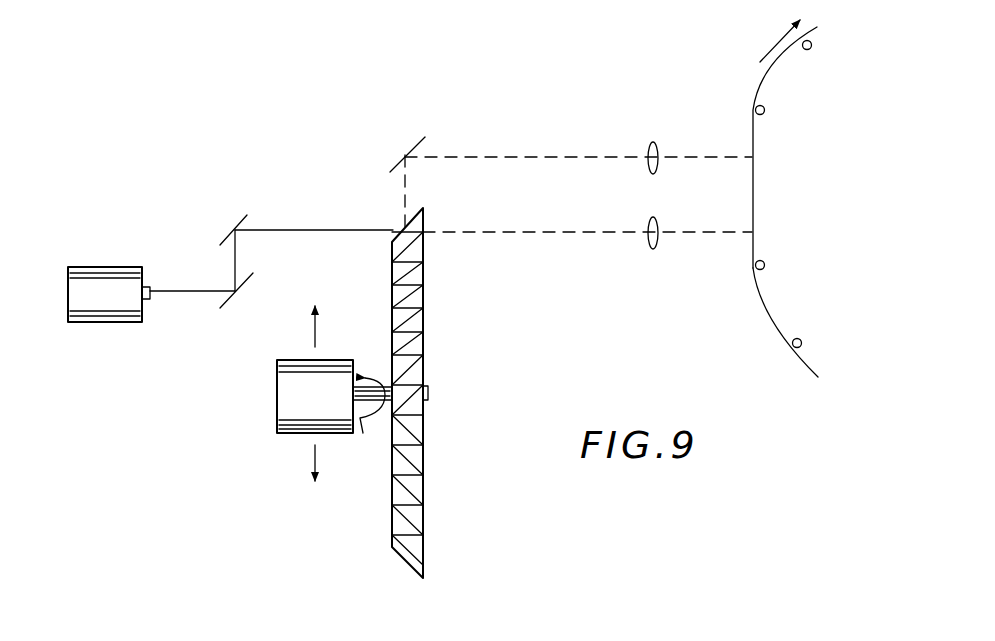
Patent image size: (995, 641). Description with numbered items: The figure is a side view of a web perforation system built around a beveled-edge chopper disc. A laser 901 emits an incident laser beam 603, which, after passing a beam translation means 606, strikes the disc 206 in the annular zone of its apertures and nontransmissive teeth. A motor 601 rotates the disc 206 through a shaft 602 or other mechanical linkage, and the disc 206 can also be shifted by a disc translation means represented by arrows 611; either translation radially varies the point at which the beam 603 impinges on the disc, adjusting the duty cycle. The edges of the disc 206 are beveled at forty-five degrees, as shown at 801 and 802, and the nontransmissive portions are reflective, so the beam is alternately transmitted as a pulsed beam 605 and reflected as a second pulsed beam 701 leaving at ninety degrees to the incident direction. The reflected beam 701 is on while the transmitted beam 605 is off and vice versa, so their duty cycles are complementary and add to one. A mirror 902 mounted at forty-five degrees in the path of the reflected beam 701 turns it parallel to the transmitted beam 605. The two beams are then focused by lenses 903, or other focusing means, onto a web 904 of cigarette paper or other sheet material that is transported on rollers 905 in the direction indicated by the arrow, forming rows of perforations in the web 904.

The laser 901 is at (140, 254).
The beam translation means 606 is at (214, 228).
The laser beam 603 is at (330, 225).
The second pulsed beam 701 is at (405, 207).
The mirror 902 is at (414, 148).
The pulsed beam 605 is at (547, 221).
The beveled edge 801 is at (455, 289).
The beveled edge 802 is at (455, 289).
The disc 206 is at (481, 484).
The motor 601 is at (284, 412).
The shaft 602 is at (373, 425).
The arrows 611 is at (314, 332).
The lenses 903 is at (662, 128).
The web 904 is at (755, 192).
The rollers 905 is at (808, 80).